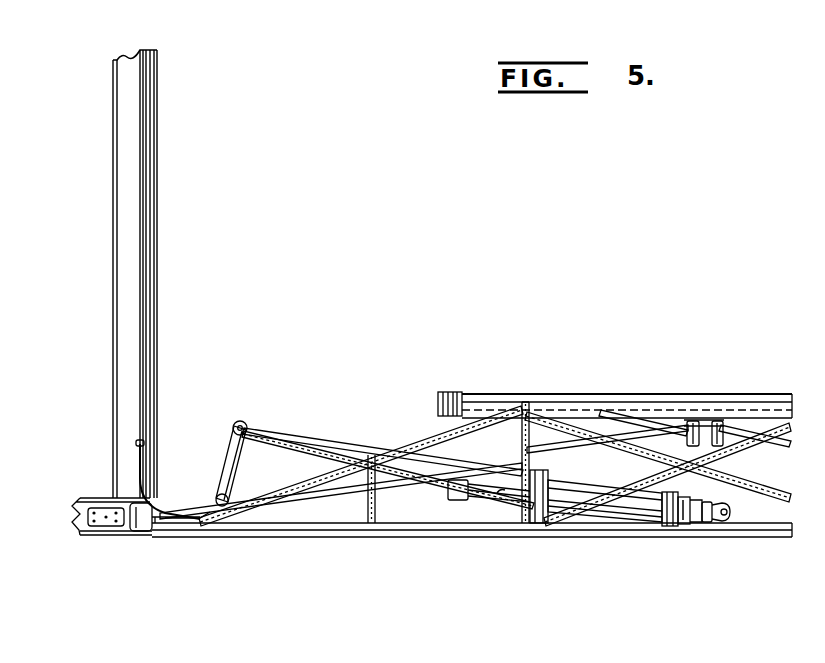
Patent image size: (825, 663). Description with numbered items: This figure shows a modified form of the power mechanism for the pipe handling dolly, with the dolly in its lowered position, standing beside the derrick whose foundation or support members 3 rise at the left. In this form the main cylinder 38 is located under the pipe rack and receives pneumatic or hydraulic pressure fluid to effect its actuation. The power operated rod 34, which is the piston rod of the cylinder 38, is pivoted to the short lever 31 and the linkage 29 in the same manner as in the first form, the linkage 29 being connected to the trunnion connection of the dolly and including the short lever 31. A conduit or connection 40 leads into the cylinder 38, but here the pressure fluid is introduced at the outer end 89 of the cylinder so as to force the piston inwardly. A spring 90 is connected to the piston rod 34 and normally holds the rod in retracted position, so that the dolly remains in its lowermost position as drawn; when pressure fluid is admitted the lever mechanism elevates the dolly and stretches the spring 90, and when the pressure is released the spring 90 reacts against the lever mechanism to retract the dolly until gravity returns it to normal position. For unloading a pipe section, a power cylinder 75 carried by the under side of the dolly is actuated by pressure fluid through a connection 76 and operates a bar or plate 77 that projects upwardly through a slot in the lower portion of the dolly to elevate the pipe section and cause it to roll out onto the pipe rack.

The foundation or support members 3 is at (113, 322).
The linkage 29 is at (329, 489).
The short lever 31 is at (233, 461).
The power operated rod 34 is at (322, 441).
The cylinder 38 is at (584, 492).
The conduit or connection 40 is at (732, 513).
The power cylinder 75 is at (688, 441).
The connection 76 is at (723, 441).
The bar or plate 77 is at (690, 424).
The outer end of the cylinder 89 is at (683, 522).
The spring 90 is at (497, 493).